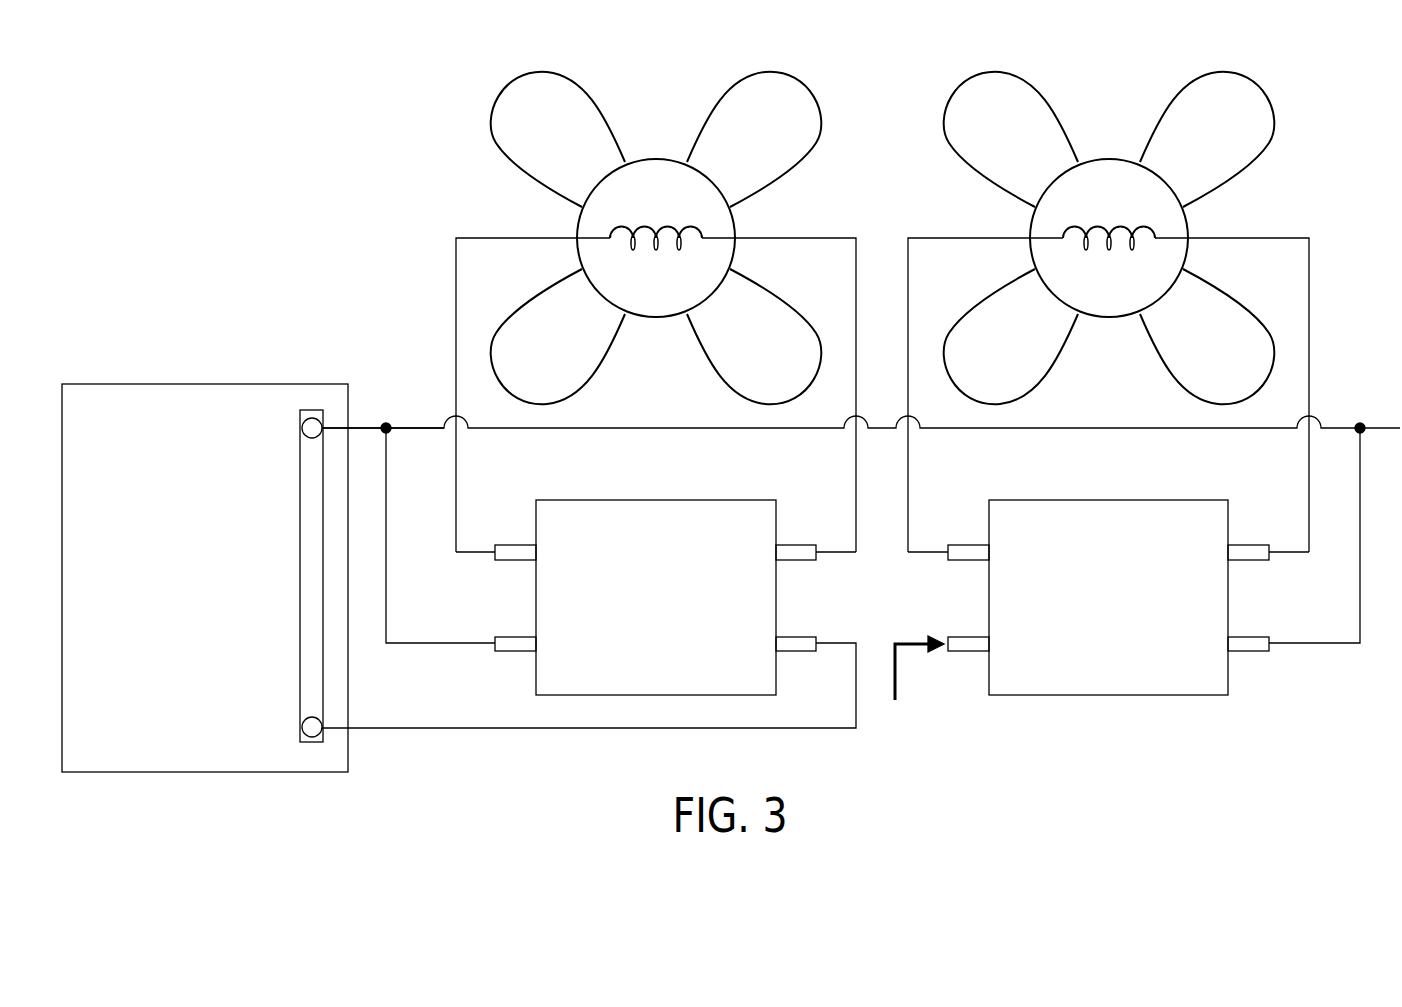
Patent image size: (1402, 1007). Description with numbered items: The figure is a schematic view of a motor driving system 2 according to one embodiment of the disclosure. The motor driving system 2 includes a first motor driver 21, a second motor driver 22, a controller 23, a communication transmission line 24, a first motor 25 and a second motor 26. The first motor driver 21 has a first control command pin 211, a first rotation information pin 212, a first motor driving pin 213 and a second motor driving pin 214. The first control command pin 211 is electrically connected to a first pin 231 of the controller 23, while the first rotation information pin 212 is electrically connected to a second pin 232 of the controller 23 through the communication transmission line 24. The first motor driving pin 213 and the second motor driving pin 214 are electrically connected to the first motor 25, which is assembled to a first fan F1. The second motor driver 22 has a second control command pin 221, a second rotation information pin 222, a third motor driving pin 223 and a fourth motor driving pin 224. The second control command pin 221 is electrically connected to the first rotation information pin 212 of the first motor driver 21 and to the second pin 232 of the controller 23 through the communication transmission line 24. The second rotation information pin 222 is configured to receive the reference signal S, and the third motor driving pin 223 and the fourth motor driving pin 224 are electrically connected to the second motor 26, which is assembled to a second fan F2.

The motor driving system 2 is at (75, 110).
The first motor driver 21 is at (655, 500).
The first control command pin 211 is at (800, 646).
The first rotation information pin 212 is at (512, 646).
The first motor driving pin 213 is at (513, 548).
The second motor driving pin 214 is at (800, 548).
The second motor driver 22 is at (1108, 500).
The second control command pin 221 is at (1252, 646).
The second rotation information pin 222 is at (967, 646).
The third motor driving pin 223 is at (967, 549).
The fourth motor driving pin 224 is at (1252, 549).
The controller 23 is at (198, 384).
The first pin 231 is at (312, 736).
The second pin 232 is at (312, 418).
The communication transmission line 24 is at (415, 426).
The first motor 25 is at (655, 224).
The second motor 26 is at (1109, 224).
The first fan F1 is at (653, 318).
The second fan F2 is at (1107, 318).
The reference signal S is at (915, 685).